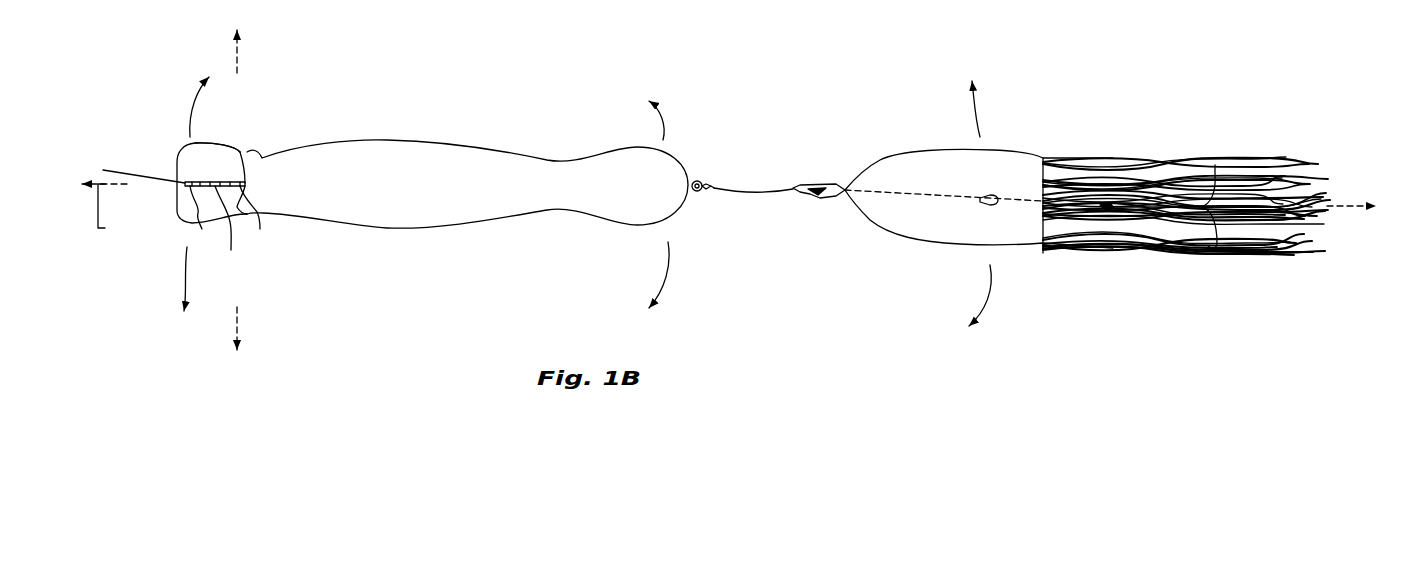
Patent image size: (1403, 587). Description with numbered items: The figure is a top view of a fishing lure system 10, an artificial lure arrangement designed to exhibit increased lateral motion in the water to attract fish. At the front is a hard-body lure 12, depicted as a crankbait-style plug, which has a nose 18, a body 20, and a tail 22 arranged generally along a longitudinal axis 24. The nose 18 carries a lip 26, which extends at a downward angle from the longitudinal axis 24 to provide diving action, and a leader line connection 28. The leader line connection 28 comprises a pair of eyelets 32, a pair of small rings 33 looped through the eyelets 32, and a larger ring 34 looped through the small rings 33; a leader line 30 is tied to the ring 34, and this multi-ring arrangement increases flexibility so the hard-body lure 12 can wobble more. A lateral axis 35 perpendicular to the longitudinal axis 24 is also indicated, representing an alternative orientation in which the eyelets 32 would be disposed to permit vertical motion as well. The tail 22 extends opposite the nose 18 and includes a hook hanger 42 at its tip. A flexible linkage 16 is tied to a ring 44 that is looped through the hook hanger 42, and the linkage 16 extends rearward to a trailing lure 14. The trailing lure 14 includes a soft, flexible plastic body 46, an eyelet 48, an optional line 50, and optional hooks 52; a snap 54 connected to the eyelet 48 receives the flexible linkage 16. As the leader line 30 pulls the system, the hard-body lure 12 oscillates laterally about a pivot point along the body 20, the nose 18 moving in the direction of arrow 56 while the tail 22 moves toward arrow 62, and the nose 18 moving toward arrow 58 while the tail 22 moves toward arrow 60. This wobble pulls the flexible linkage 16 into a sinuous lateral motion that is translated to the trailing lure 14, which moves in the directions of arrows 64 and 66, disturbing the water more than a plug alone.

The fishing lure system 10 is at (740, 288).
The hard-body lure 12 is at (398, 243).
The trailing lure 14 is at (1060, 289).
The flexible linkage 16 is at (768, 201).
The nose 18 is at (263, 129).
The body 20 is at (393, 133).
The tail 22 is at (572, 217).
The longitudinal axis 24 is at (1357, 205).
The lip 26 is at (173, 193).
The leader line connection 28 is at (222, 159).
The leader line 30 is at (137, 167).
The pair of eyelets 32 is at (241, 152).
The pair of small rings 33 is at (232, 218).
The ring 34 is at (228, 228).
The lateral axis 35 is at (240, 53).
The hook hanger 42 is at (693, 192).
The ring 44 is at (714, 186).
The body 46 is at (877, 215).
The eyelet 48 is at (870, 165).
The line 50 is at (1072, 205).
The hooks 52 is at (980, 194).
The snap 54 is at (835, 182).
The arrow 56 is at (187, 104).
The arrow 58 is at (190, 292).
The arrow 60 is at (663, 140).
The arrow 62 is at (668, 242).
The arrow 64 is at (980, 137).
The arrow 66 is at (985, 300).